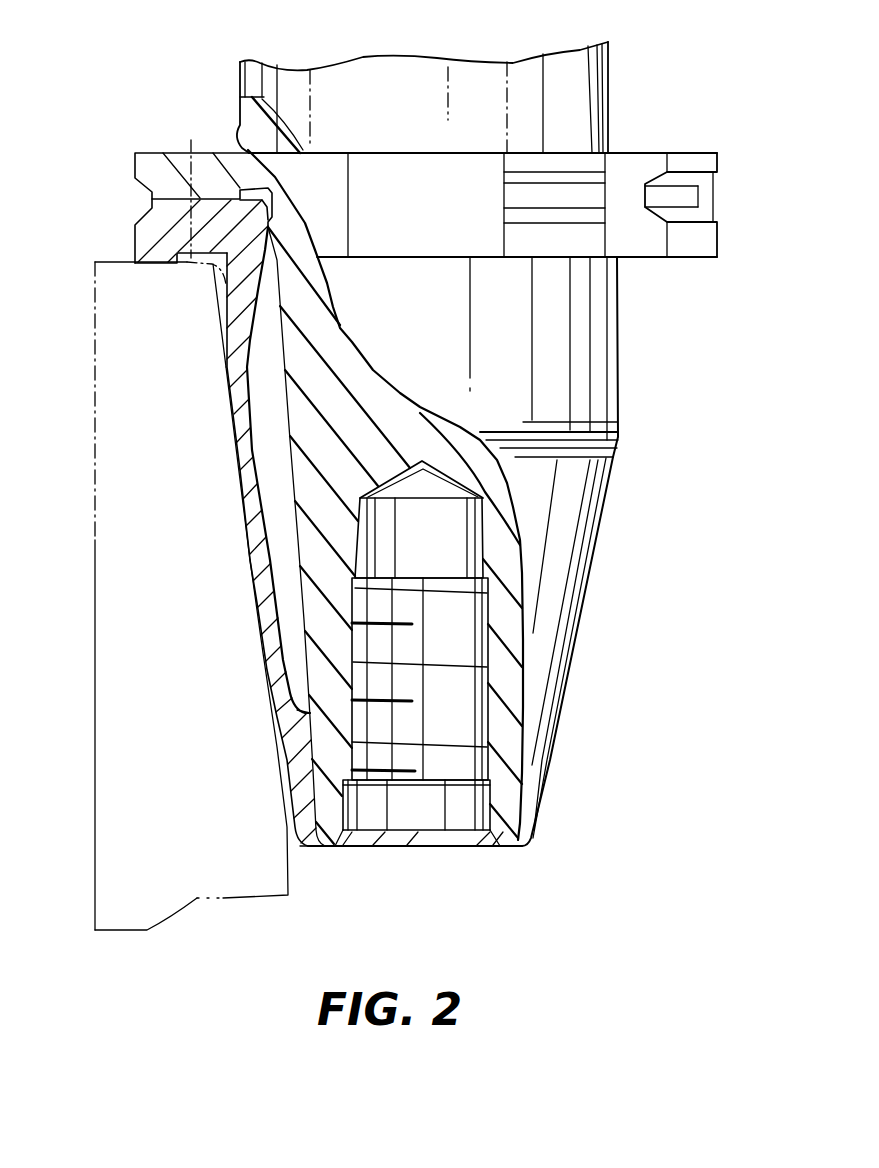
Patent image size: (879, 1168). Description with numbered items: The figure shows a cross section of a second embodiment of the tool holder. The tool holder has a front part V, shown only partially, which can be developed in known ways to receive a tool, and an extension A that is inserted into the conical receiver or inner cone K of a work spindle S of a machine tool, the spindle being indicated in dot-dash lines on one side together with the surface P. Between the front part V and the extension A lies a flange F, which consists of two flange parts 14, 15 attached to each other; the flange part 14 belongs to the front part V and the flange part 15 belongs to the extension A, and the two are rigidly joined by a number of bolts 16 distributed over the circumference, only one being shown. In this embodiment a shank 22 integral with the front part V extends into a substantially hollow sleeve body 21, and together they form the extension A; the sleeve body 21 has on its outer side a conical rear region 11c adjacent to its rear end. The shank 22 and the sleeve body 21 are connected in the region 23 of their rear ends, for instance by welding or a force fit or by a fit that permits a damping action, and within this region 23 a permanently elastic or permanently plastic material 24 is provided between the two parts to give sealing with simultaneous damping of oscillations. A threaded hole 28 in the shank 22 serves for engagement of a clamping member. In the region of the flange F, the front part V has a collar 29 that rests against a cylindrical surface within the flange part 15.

The front part V is at (531, 86).
The flange F is at (732, 195).
The collar 29 is at (328, 195).
The flange part 14 is at (148, 176).
The flange part 15 is at (150, 227).
The bolt 16 is at (187, 146).
The tool pot surface P is at (130, 263).
The inner cone K is at (217, 302).
The work spindle S is at (125, 738).
The rear region 11c is at (241, 525).
The sleeve body 21 is at (268, 602).
The shank 22 is at (310, 395).
The extension A is at (670, 457).
The threaded hole 28 is at (443, 755).
The region 23 is at (303, 803).
The permanently elastic or permanently plastic material 24 is at (318, 849).